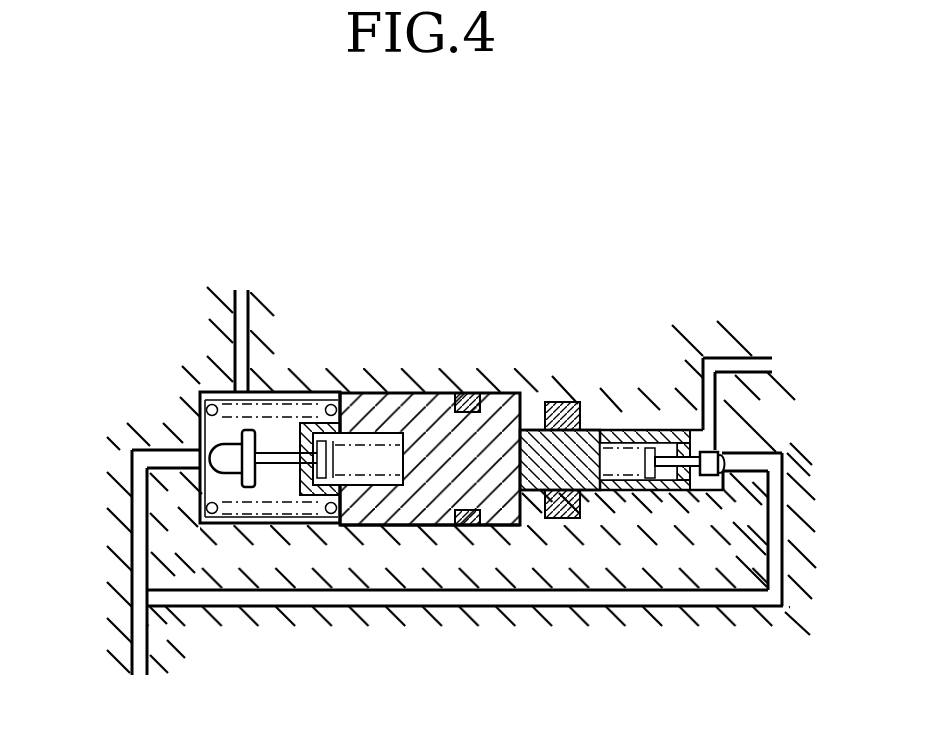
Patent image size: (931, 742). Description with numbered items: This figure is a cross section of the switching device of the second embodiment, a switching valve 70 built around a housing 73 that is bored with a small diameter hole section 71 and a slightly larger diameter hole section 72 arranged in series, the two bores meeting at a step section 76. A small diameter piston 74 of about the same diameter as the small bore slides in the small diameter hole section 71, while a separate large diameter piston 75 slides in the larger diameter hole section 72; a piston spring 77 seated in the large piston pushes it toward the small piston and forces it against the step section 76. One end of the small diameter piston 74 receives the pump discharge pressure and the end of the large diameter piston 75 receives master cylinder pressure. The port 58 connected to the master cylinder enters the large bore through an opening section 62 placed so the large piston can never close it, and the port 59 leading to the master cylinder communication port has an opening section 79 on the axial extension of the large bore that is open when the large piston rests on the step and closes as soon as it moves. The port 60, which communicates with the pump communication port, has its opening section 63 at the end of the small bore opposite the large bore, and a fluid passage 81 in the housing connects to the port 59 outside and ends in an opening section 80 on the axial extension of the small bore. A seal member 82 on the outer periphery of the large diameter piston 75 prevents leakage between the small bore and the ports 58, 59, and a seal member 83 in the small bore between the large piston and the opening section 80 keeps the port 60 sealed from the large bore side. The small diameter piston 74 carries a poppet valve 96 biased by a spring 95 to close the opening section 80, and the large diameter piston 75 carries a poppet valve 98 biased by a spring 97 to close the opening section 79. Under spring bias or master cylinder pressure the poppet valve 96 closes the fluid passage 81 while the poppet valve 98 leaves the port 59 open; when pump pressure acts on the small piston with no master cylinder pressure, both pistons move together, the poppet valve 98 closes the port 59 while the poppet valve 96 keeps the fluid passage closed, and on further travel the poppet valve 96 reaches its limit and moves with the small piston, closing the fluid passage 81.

The port 58 is at (248, 355).
The port 59 is at (148, 448).
The port 60 is at (678, 373).
The opening section 62 is at (210, 392).
The opening section 63 is at (725, 452).
The switching valve 70 is at (394, 460).
The small diameter hole section 71 is at (592, 428).
The larger diameter hole section 72 is at (388, 393).
The housing 73 is at (462, 393).
The small diameter piston 74 is at (542, 518).
The large diameter piston 75 is at (437, 525).
The step section 76 is at (505, 395).
The piston spring 77 is at (298, 523).
The opening section 79 is at (212, 452).
The opening section 80 is at (724, 457).
The fluid passage 81 is at (775, 608).
The seal member 82 is at (480, 523).
The seal member 83 is at (592, 495).
The spring 95 is at (640, 482).
The poppet valve 96 is at (710, 478).
The spring 97 is at (373, 485).
The poppet valve 98 is at (229, 470).